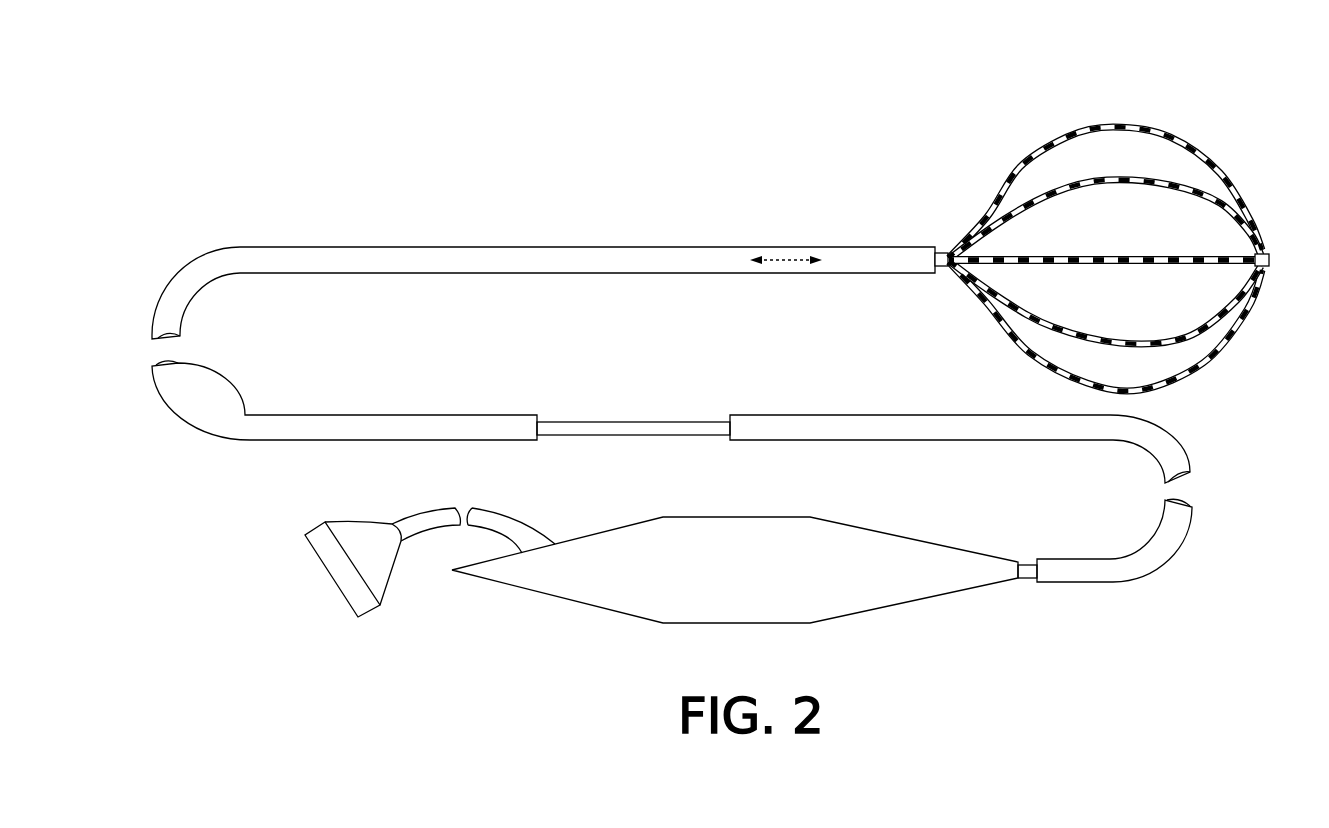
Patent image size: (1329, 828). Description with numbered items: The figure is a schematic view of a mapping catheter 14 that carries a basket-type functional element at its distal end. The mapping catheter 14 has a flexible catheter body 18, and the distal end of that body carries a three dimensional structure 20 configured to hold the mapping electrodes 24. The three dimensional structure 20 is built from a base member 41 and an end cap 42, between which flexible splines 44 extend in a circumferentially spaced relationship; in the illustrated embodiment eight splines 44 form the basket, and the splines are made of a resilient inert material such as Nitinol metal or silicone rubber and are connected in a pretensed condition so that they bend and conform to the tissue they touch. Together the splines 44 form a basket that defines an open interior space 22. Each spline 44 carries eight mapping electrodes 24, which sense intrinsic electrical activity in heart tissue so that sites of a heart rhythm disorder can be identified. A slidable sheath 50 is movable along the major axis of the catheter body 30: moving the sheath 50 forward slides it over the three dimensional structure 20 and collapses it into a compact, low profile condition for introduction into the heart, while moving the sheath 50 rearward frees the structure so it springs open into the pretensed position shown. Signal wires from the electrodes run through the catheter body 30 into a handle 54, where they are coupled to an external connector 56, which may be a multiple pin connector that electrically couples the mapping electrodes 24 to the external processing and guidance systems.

The mapping catheter 14 is at (642, 138).
The flexible catheter body 18 is at (937, 250).
The three dimensional structure 20 is at (1266, 150).
The open interior space 22 is at (1176, 312).
The mapping electrodes 24 is at (1212, 142).
The catheter body 30 is at (1145, 337).
The base member 41 is at (948, 272).
The end cap 42 is at (1275, 258).
The flexible splines 44 is at (1027, 165).
The slidable sheath 50 is at (790, 245).
The handle 54 is at (900, 530).
The external connector 56 is at (322, 535).